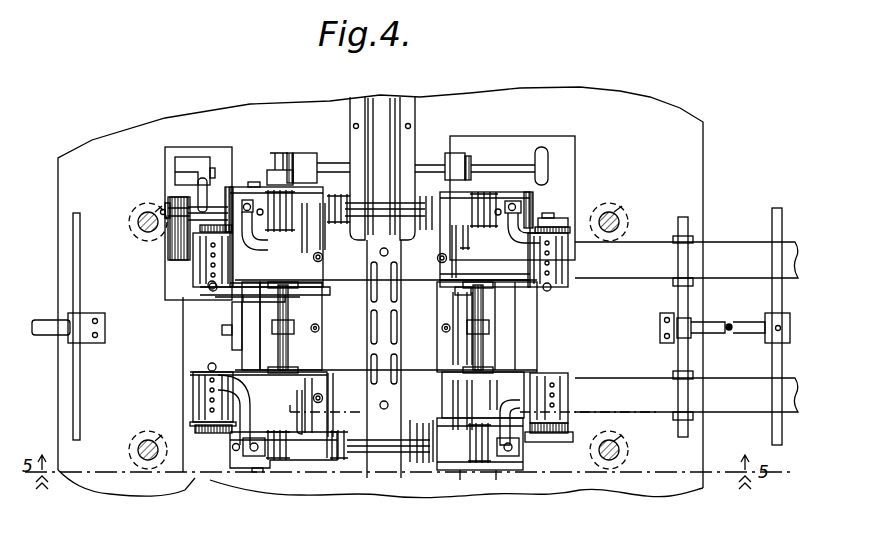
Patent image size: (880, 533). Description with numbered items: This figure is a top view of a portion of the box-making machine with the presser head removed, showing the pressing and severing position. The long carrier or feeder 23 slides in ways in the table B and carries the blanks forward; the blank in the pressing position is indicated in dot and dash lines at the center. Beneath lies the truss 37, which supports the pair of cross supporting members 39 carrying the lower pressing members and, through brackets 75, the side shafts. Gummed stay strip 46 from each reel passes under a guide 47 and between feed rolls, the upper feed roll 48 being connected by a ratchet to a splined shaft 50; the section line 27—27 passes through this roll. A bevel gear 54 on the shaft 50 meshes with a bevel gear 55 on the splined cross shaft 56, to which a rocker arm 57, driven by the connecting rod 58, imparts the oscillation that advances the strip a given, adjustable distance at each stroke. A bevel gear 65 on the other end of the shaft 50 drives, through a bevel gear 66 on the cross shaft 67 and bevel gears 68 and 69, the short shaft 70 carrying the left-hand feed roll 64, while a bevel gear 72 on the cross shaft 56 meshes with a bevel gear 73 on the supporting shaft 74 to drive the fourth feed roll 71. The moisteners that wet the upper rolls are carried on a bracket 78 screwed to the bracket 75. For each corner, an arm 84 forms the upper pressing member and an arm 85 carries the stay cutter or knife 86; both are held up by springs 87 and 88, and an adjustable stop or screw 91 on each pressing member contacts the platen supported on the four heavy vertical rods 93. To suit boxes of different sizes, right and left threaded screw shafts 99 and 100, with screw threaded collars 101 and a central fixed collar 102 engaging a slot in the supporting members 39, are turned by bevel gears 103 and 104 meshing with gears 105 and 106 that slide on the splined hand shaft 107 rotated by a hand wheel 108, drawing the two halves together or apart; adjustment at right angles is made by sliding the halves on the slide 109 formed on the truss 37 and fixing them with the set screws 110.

The table B is at (103, 162).
The carrier or feeder 23 is at (380, 198).
The section line 27— 27 is at (468, 470).
The truss 37 is at (250, 377).
The cross supporting members 39 is at (515, 332).
The stay strip 46 is at (640, 255).
The guide 47 is at (690, 240).
The upper feed roll 48 is at (560, 400).
The splined shaft 50 is at (560, 354).
The bevel gear 54 is at (568, 228).
The bevel gear 55 is at (560, 205).
The cross shaft 56 is at (392, 220).
The rocker arm 57 is at (200, 197).
The connecting rod 58 is at (188, 157).
The feed roll 64 is at (205, 412).
The bevel gear 65 is at (565, 445).
The bevel gear 66 is at (540, 434).
The cross shaft 67 is at (360, 458).
The bevel gear 68 is at (246, 470).
The bevel gear 69 is at (200, 436).
The short shaft 70 is at (208, 368).
The feed roll 71 is at (203, 270).
The bevel gear 72 is at (229, 187).
The bevel gear 73 is at (162, 212).
The supporting shaft 74 is at (210, 300).
The brackets 75 is at (594, 324).
The bracket 78 is at (245, 243).
The upper pressing member 84 is at (445, 402).
The stay cutter arm 85 is at (460, 408).
The stay cutter or knife 86 is at (478, 414).
The spring 87 is at (425, 465).
The spring 88 is at (478, 465).
The adjustable stop or screw 91 is at (438, 262).
The vertical rods 93 is at (620, 224).
The screw shaft 99 is at (292, 302).
The screw shaft 100 is at (470, 326).
The screw threaded collars 101 is at (292, 288).
The central fixed collar 102 is at (290, 294).
The bevel gear 103 is at (541, 147).
The bevel gear 104 is at (286, 160).
The gear 105 is at (468, 158).
The gear 106 is at (305, 153).
The hand shaft 107 is at (430, 168).
The hand wheel 108 is at (548, 160).
The slide 109 is at (232, 327).
The set screws 110 is at (318, 328).